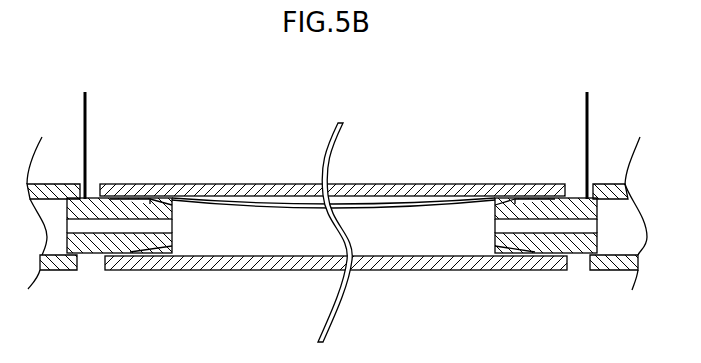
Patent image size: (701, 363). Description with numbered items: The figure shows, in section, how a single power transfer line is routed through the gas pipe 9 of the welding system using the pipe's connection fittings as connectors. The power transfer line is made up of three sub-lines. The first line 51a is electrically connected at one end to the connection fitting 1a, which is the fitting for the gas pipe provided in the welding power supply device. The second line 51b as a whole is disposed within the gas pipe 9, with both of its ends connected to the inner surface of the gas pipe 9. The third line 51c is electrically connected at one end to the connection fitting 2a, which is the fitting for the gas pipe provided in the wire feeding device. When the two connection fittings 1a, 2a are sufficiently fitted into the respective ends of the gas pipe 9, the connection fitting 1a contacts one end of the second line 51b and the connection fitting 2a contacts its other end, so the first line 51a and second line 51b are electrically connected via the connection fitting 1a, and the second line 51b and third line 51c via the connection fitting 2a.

The gas pipe 9 is at (180, 185).
The connection fitting for the gas pipe provided in the welding power supply device 1a is at (117, 213).
The connection fitting for the gas pipe provided in the wire feeding device 2a is at (512, 213).
The first line 51a is at (85, 110).
The second line 51b is at (287, 207).
The third line 51c is at (587, 110).